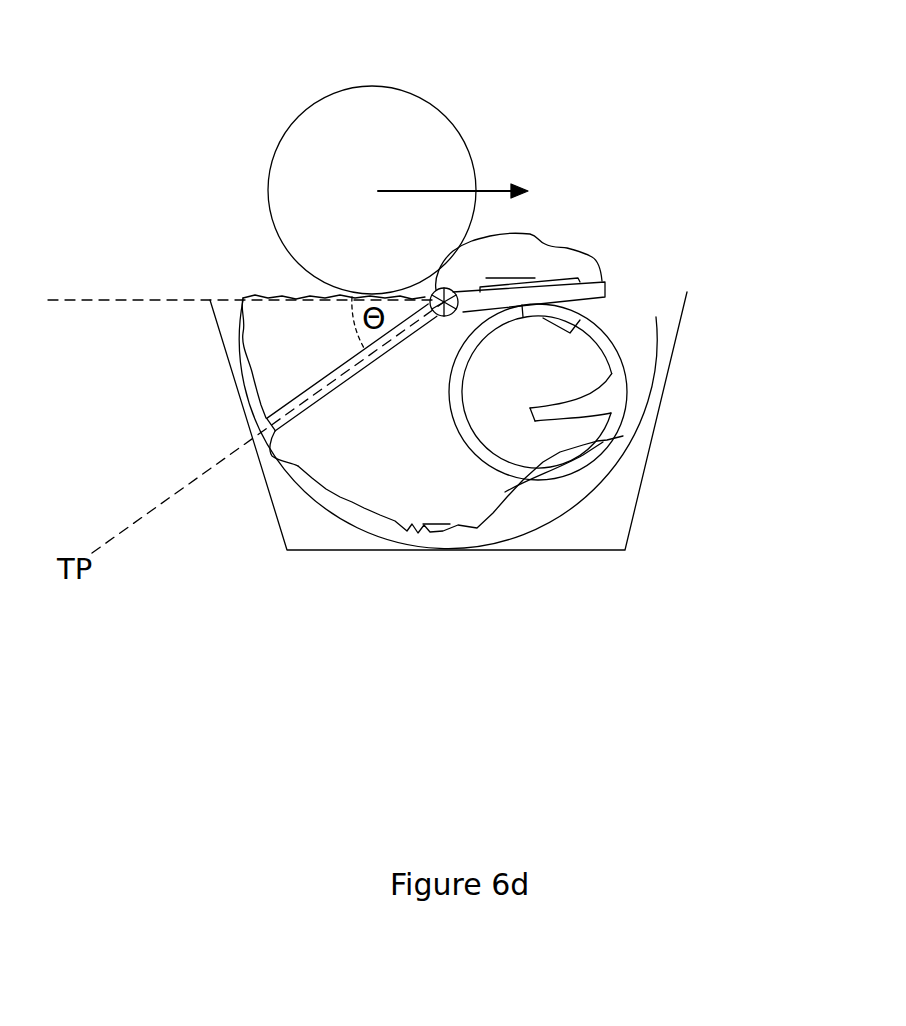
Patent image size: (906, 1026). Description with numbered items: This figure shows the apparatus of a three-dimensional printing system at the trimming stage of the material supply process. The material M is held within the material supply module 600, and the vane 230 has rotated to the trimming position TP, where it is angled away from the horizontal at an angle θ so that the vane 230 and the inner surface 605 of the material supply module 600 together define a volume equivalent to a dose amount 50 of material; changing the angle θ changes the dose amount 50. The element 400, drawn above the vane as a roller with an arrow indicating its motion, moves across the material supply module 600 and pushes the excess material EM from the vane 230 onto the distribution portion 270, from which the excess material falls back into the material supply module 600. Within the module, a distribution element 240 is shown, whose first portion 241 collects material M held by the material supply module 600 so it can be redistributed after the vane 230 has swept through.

The element 400 is at (380, 86).
The distribution portion 270 is at (607, 287).
The distribution element 240 is at (622, 366).
The first portion of the distribution element 241 is at (618, 442).
The dose amount 50 is at (333, 356).
The vane 230 is at (273, 460).
The inner surface 605 is at (233, 366).
The material supply module 600 is at (520, 552).